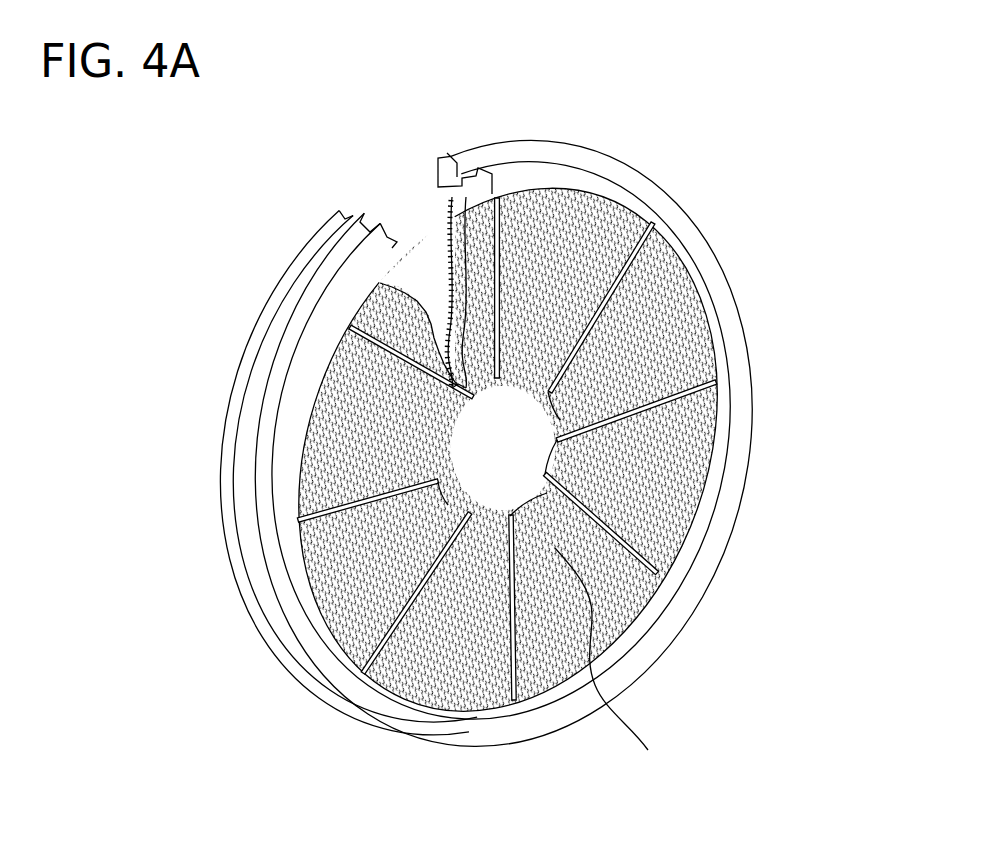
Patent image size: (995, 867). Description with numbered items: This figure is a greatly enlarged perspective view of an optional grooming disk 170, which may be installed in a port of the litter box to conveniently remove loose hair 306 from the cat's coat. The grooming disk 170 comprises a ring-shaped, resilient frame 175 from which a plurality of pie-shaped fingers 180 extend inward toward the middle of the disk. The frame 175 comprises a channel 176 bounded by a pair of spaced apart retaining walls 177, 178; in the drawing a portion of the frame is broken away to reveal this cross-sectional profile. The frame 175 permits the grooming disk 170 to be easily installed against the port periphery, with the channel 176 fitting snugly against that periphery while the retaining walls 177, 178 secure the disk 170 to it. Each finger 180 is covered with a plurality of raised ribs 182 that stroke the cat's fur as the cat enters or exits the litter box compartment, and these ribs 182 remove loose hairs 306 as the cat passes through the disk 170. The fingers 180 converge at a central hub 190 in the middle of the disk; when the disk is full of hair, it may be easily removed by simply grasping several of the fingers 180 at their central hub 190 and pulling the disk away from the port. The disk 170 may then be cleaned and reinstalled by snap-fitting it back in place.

The grooming disk 170 is at (484, 96).
The frame 175 is at (612, 144).
The channel 176 is at (330, 253).
The retaining wall 177 is at (290, 287).
The retaining wall 178 is at (380, 240).
The pie-shaped finger 180 is at (716, 287).
The raised rib 182 is at (722, 363).
The central hub 190 is at (530, 456).
The loose hair 306 is at (670, 697).